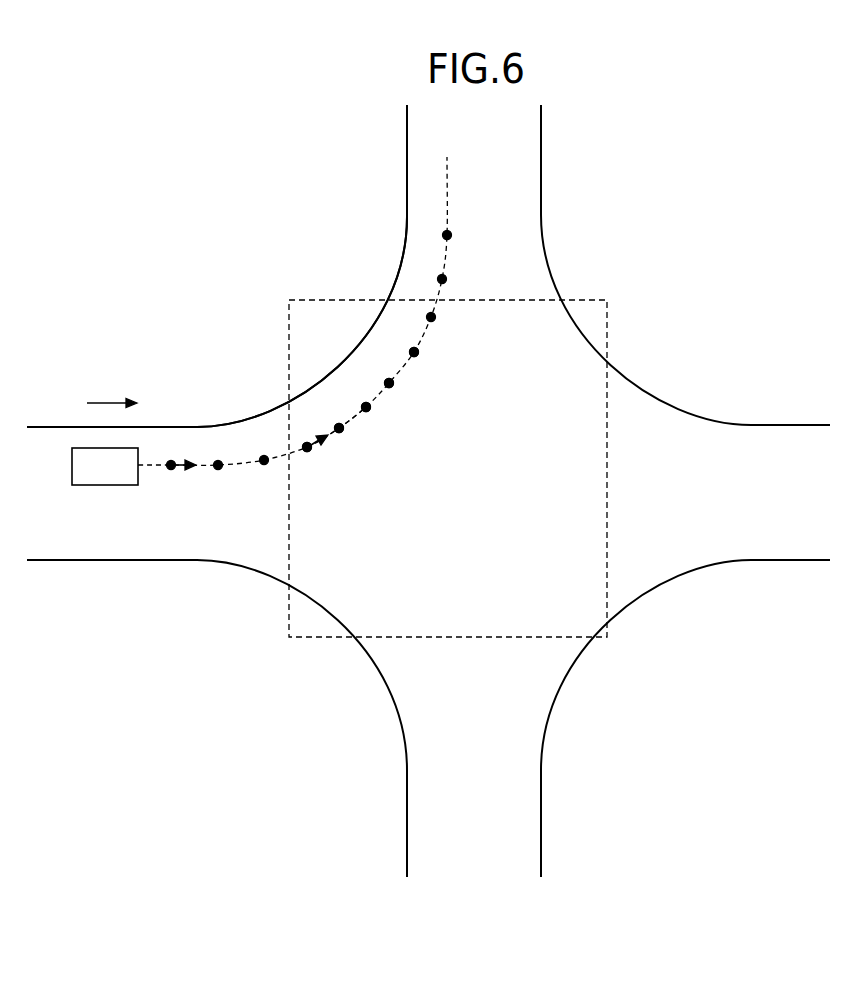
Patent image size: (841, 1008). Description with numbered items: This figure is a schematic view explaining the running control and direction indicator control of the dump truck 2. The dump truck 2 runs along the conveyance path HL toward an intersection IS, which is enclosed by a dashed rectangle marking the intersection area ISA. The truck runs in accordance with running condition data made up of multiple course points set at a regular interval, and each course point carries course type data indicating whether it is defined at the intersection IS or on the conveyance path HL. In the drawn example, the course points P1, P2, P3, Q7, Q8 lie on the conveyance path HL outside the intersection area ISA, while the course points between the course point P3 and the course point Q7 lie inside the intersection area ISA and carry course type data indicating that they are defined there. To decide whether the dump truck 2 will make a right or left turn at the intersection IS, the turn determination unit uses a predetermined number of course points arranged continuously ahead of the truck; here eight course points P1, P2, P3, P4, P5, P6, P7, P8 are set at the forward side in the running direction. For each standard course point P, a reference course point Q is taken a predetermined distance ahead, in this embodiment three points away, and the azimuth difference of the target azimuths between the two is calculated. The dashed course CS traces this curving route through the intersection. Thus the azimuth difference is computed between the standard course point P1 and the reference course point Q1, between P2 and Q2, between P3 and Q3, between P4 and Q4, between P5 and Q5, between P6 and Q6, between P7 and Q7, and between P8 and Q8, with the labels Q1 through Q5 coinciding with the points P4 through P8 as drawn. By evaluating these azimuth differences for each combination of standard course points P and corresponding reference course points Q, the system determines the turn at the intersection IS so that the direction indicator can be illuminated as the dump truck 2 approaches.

The dump truck 2 is at (100, 487).
The standard course point P is at (171, 460).
The course point (standard course point) P1 is at (171, 470).
The course point (standard course point) P2 is at (218, 470).
The course point (standard course point) P3 is at (264, 465).
The course point (standard course point) P4 is at (315, 481).
The course point (standard course point) P5 is at (357, 472).
The course point (standard course point) P6 is at (418, 418).
The course point (standard course point) P7 is at (436, 384).
The course point (standard course point) P8 is at (461, 353).
The reference course point Q is at (307, 442).
The reference course point Q1 is at (307, 452).
The reference course point Q2 is at (340, 433).
The reference course point Q3 is at (371, 408).
The reference course point Q4 is at (394, 384).
The reference course point Q5 is at (419, 353).
The reference course point Q6 is at (436, 318).
The reference course point Q7 is at (447, 280).
The reference course point Q8 is at (452, 236).
The travel course / center line CS is at (449, 196).
The intersection IS is at (637, 347).
The intersection area ISA is at (607, 578).
The conveyance path HL is at (148, 548).